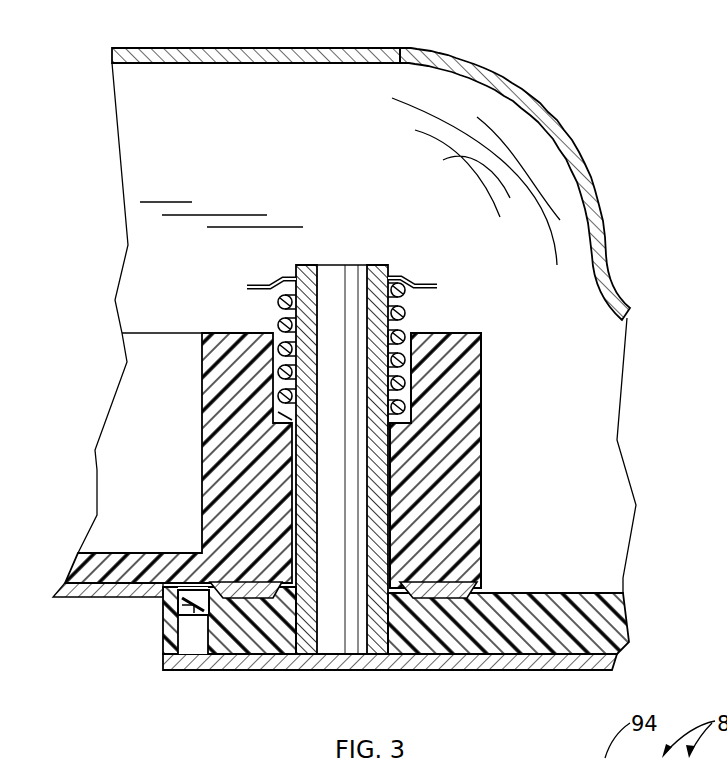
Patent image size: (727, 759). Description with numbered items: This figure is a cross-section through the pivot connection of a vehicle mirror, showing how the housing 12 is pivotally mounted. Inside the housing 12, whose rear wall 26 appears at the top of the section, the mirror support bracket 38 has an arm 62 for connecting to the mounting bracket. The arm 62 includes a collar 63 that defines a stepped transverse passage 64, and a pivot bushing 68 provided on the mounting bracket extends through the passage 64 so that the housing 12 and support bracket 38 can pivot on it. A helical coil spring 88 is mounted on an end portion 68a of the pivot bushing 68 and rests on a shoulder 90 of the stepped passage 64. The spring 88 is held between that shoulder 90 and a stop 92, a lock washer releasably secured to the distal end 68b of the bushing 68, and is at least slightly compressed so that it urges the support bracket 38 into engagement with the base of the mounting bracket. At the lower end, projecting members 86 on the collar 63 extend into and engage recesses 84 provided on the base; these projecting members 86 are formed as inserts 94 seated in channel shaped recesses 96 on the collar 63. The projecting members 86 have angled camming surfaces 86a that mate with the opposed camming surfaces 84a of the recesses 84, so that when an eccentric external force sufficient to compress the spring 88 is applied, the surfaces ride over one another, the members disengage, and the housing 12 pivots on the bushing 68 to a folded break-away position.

The housing 12 is at (545, 85).
The back section or rear wall 26 is at (283, 47).
The mirror support bracket 38 is at (158, 316).
The arm 62 is at (490, 405).
The collar 63 is at (478, 472).
The transverse passage 64 is at (396, 513).
The pivot bushing 68 is at (296, 482).
The end portion 68a is at (403, 329).
The distal end 68b is at (318, 264).
The recesses 84 is at (253, 598).
The camming surfaces 84a is at (427, 600).
The projecting members 86 is at (445, 612).
The camming surfaces 86a is at (485, 592).
The spring 88 is at (478, 352).
The shoulder 90 is at (282, 403).
The stop 92 is at (426, 288).
The inserts 94 is at (206, 617).
The channel shaped recesses 96 is at (475, 583).